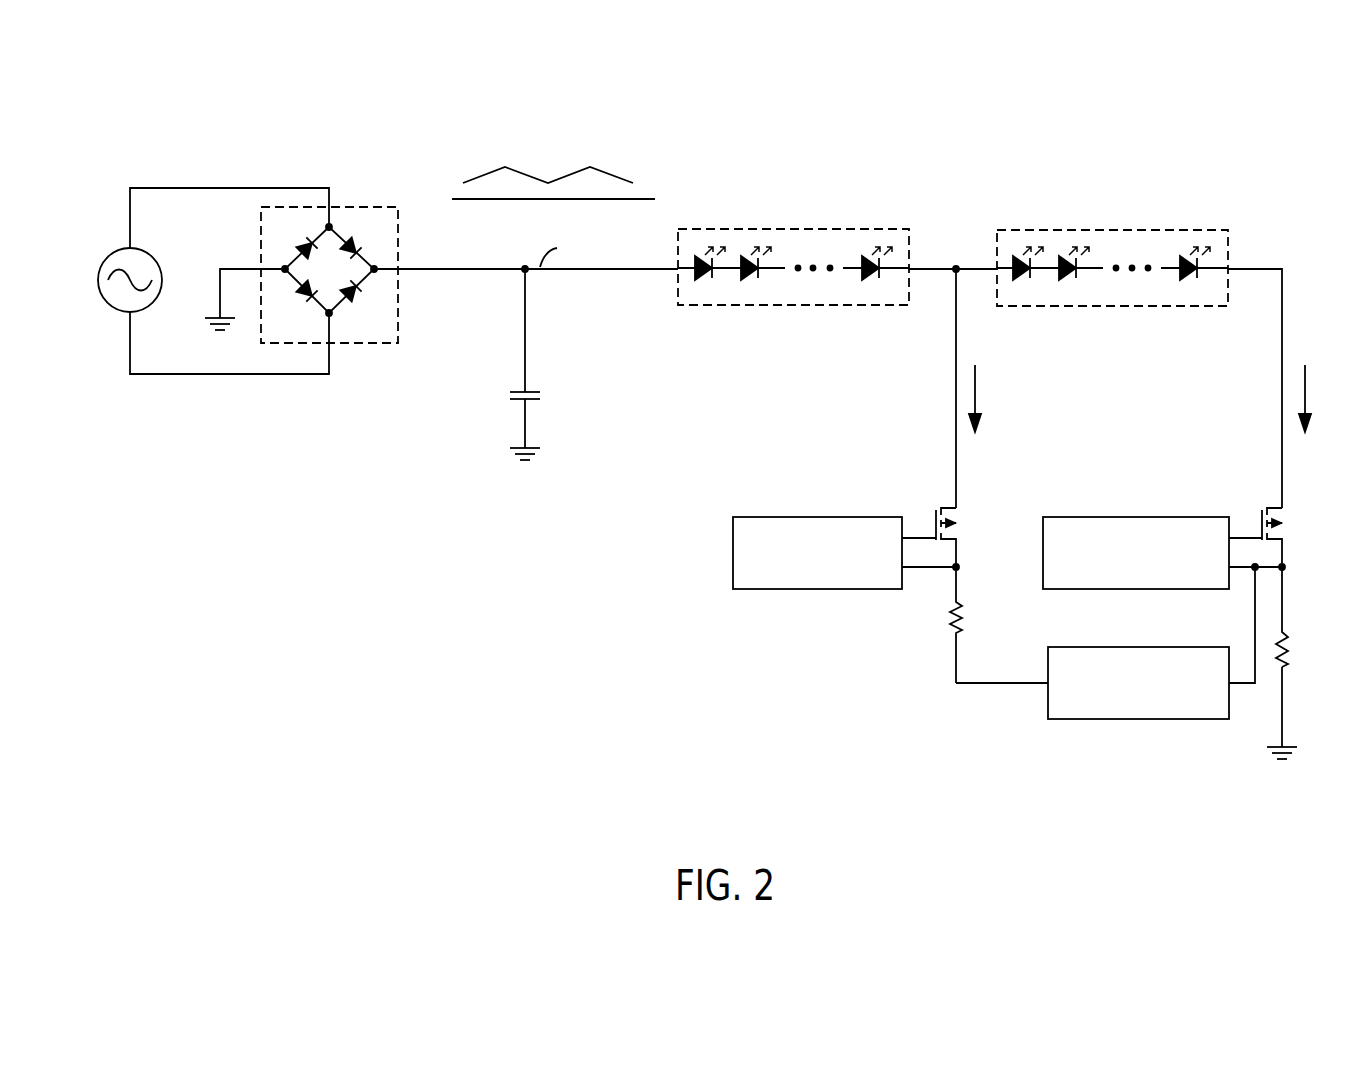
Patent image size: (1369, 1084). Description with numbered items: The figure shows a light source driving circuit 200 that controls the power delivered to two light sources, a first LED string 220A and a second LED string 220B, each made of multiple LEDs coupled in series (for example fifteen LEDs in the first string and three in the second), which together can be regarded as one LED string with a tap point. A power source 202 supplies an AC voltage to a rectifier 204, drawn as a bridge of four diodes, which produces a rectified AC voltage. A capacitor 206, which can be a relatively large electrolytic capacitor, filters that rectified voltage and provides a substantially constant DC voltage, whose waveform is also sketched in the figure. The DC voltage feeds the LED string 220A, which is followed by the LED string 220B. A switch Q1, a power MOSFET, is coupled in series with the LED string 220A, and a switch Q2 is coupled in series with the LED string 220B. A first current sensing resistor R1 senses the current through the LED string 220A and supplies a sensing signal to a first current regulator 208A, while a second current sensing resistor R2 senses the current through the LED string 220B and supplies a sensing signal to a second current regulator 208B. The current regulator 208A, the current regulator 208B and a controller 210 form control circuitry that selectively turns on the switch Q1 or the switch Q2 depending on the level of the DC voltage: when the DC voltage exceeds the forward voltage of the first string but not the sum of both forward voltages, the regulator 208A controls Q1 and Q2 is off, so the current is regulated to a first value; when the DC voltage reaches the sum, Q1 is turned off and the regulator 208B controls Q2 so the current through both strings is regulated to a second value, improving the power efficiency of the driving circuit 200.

The light source driving circuit 200 is at (197, 160).
The power source 202 is at (109, 256).
The rectifier 204 is at (350, 205).
The capacitor 206 is at (532, 390).
The first current regulator 208A is at (822, 516).
The second current regulator 208B is at (1152, 516).
The controller 210 is at (1110, 647).
The first LED string 220A is at (803, 229).
The second LED string 220B is at (1125, 230).
The switch Q1 is at (949, 505).
The switch Q2 is at (1276, 505).
The first current sensing resistor R1 is at (963, 623).
The second current sensing resistor R2 is at (1291, 657).